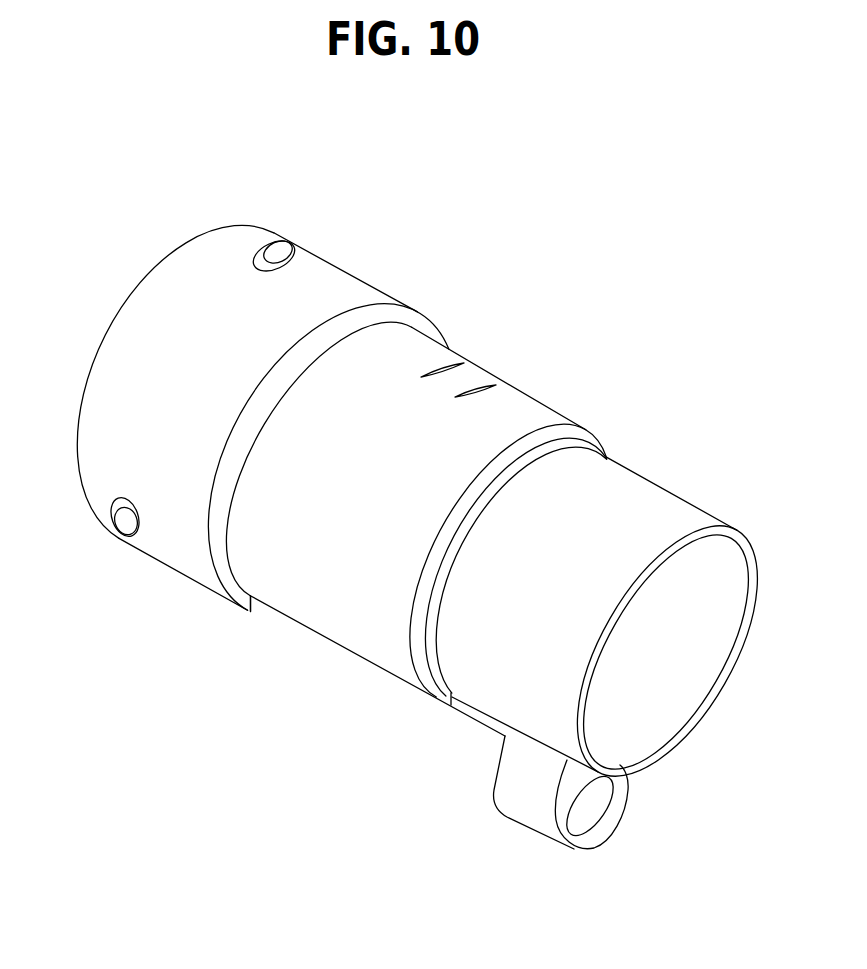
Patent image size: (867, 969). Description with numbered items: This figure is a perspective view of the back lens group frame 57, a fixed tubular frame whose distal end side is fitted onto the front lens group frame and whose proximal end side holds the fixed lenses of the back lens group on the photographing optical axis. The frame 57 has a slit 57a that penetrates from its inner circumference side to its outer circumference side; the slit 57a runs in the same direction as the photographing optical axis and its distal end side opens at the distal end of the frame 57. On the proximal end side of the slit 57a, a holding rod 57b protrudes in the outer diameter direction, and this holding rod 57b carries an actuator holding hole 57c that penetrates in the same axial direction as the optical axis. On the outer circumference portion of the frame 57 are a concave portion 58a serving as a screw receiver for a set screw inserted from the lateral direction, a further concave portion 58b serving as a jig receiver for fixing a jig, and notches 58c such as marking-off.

The back lens group frame 57 is at (454, 307).
The slit 57a is at (257, 604).
The holding rod 57b is at (532, 831).
The actuator holding hole 57c is at (587, 826).
The concave portion 58a is at (288, 250).
The concave portion 58b is at (122, 529).
The notches 58c is at (484, 383).